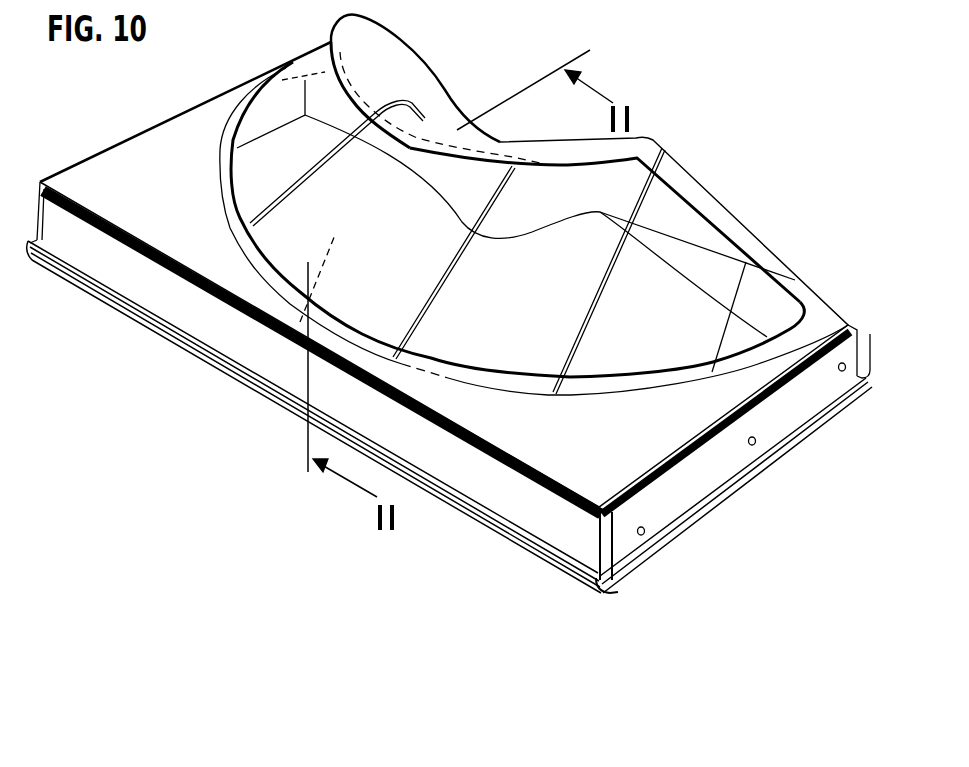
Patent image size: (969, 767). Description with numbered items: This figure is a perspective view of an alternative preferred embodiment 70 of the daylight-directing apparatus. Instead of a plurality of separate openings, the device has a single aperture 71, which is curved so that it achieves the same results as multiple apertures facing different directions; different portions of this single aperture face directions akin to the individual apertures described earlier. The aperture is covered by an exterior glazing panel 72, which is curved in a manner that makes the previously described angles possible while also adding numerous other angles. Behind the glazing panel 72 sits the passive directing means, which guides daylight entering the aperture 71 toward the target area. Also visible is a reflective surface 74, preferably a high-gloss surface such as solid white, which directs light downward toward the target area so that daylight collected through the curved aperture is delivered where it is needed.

The alternative preferred embodiment 70 is at (710, 165).
The single aperture 71 is at (662, 253).
The exterior glazing panel 72 is at (697, 242).
The reflective surface 74 is at (455, 207).